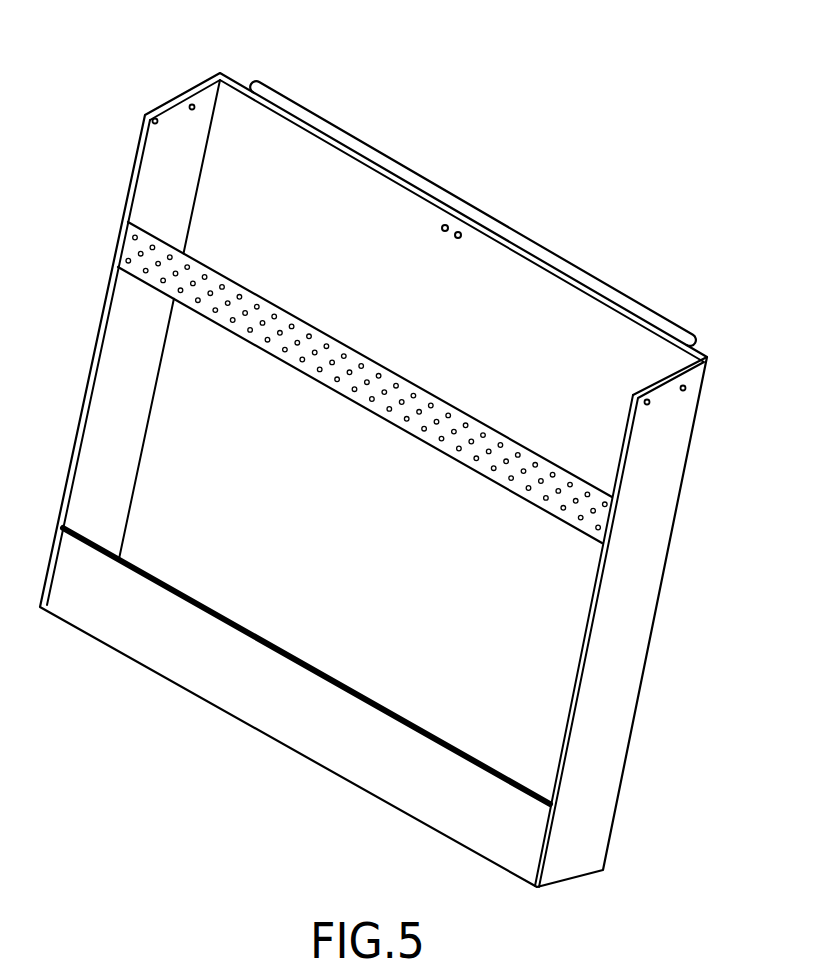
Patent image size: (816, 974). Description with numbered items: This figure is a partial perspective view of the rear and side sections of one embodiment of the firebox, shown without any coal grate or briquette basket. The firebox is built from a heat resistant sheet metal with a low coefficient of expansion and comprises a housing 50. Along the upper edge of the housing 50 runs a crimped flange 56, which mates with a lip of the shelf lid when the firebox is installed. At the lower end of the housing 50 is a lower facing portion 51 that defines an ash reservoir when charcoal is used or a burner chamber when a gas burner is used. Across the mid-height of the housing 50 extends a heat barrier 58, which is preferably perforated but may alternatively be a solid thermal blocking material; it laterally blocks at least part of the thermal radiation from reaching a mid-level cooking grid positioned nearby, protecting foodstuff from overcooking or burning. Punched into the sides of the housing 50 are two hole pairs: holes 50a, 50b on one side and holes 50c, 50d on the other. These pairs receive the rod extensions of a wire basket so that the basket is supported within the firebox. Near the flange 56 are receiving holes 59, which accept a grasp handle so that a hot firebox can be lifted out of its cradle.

The housing 50 is at (615, 812).
The hole 50a is at (154, 122).
The hole 50b is at (192, 104).
The hole 50c is at (649, 403).
The hole 50d is at (686, 389).
The lower facing portion 51 is at (333, 674).
The crimped flange 56 is at (690, 335).
The heat barrier 58 is at (462, 410).
The receiving holes 59 is at (459, 233).